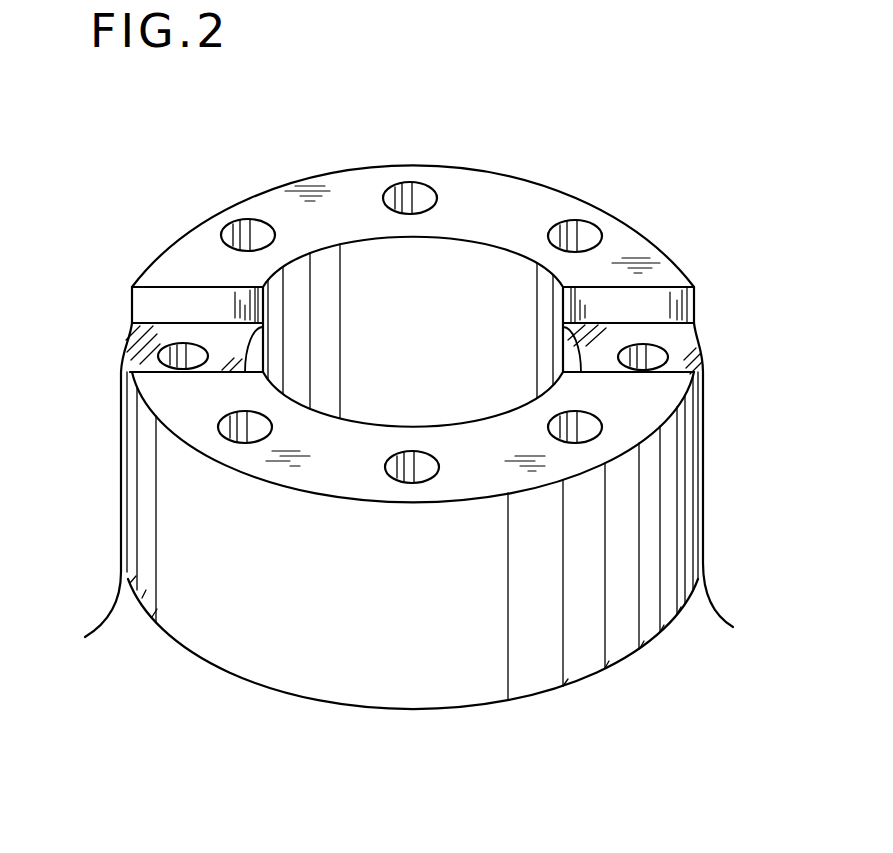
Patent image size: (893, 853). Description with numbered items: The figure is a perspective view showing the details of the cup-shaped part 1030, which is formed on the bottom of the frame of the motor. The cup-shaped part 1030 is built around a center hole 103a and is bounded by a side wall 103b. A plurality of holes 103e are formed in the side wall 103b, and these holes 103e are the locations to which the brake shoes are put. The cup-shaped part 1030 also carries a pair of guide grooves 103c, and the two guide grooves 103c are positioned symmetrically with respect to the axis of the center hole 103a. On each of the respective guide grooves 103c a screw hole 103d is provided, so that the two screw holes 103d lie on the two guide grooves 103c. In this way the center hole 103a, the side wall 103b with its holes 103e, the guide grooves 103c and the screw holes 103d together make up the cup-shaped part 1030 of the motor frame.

The center hole 103a is at (365, 267).
The side wall 103b is at (185, 262).
The guide groove 103c is at (132, 357).
The screw hole 103d is at (183, 350).
The hole 103e is at (420, 195).
The cup-shaped part 1030 is at (667, 507).